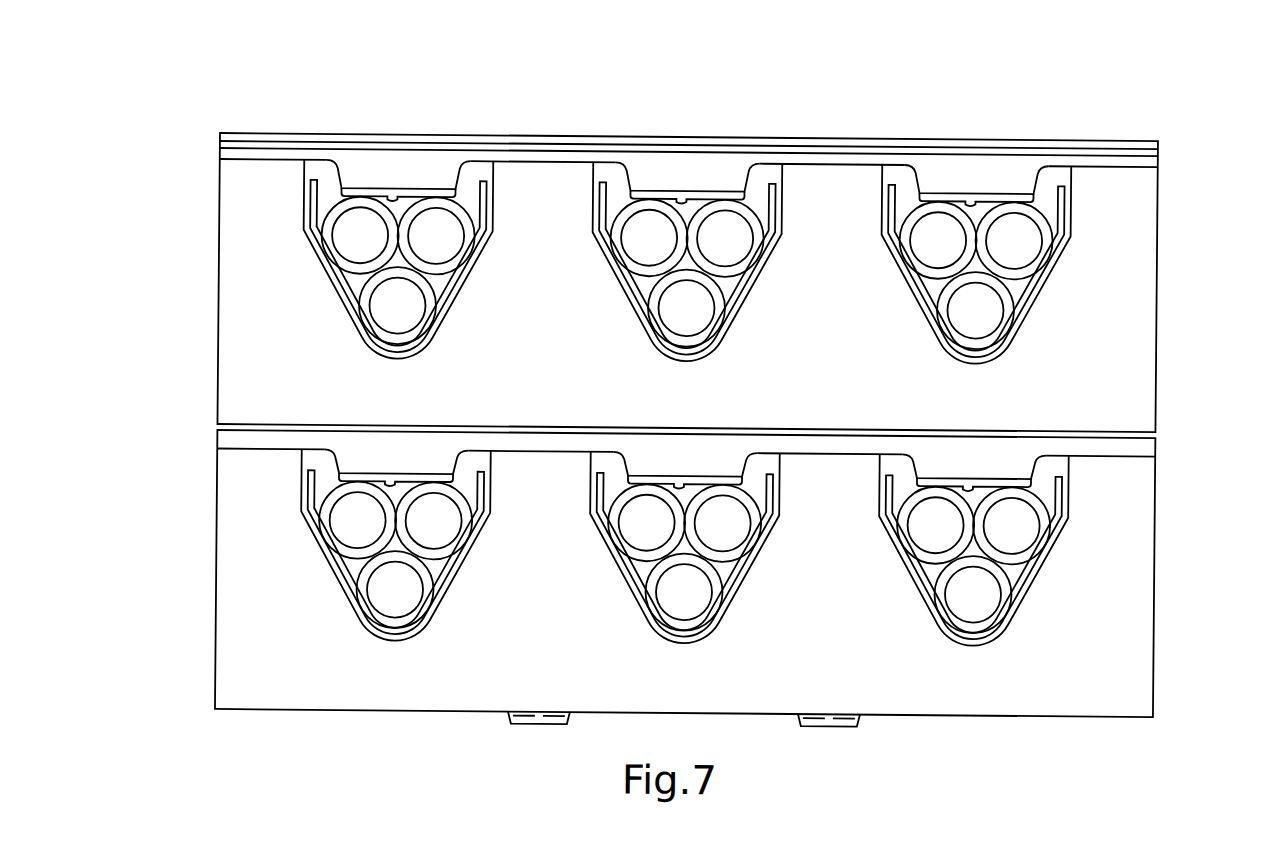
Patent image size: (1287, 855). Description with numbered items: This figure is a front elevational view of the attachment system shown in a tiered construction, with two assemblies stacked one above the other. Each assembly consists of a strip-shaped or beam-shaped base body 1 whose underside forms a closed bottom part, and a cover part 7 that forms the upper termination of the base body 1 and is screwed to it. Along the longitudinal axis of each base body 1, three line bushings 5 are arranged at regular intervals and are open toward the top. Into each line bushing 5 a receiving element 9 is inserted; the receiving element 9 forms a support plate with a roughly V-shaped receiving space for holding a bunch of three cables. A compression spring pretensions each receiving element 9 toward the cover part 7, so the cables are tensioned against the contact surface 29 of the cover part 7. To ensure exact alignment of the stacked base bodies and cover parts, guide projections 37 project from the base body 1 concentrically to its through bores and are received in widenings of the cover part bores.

The base body 1 is at (1113, 325).
The line bushing 5 is at (310, 195).
The cover part 7 is at (840, 160).
The receiving element 9 is at (488, 200).
The contact surface 29 is at (394, 197).
The guide projection 37 is at (526, 726).